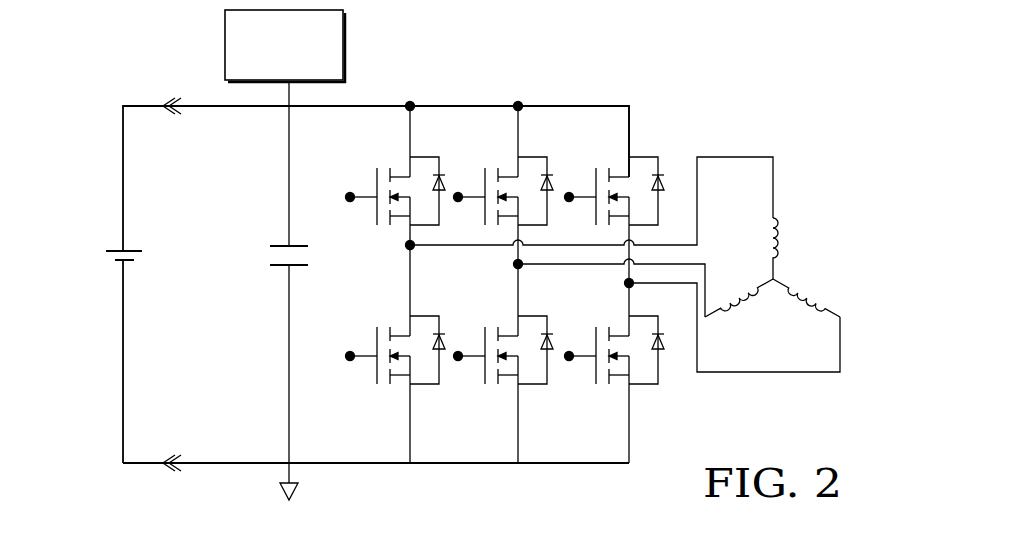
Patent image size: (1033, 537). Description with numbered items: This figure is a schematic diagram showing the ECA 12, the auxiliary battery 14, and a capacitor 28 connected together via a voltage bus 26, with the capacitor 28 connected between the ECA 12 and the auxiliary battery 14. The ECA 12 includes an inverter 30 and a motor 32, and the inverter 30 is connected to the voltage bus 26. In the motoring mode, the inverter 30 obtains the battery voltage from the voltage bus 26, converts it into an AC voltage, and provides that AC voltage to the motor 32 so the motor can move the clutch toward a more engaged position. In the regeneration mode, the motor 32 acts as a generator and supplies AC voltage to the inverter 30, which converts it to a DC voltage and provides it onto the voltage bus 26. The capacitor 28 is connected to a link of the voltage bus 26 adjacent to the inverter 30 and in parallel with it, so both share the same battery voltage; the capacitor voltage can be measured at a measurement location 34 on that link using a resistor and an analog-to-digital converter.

The ECA 12 is at (634, 57).
The auxiliary battery 14 is at (115, 248).
The voltage bus 26 is at (247, 107).
The capacitor 28 is at (280, 243).
The inverter 30 is at (447, 106).
The motor 32 is at (723, 157).
The measurement location 34 is at (345, 44).